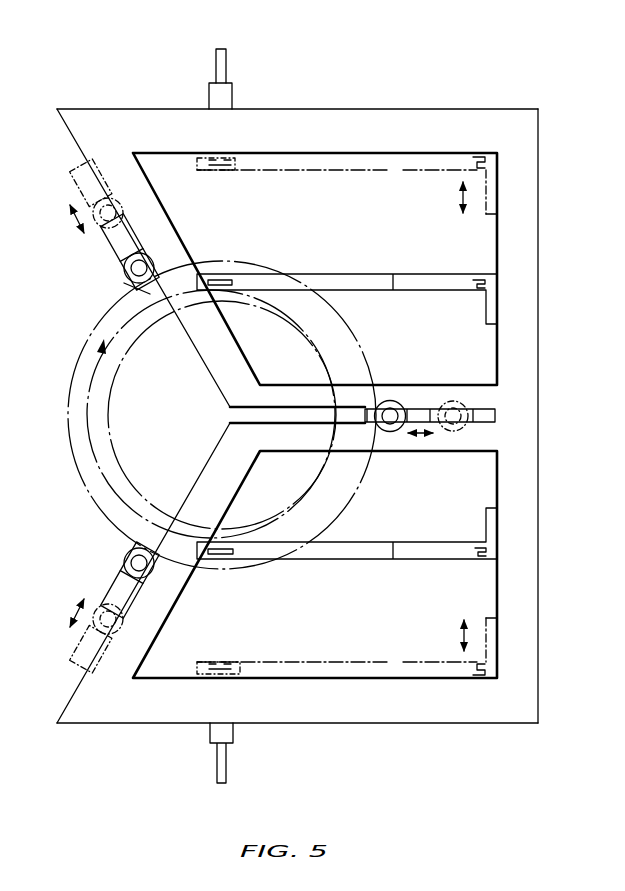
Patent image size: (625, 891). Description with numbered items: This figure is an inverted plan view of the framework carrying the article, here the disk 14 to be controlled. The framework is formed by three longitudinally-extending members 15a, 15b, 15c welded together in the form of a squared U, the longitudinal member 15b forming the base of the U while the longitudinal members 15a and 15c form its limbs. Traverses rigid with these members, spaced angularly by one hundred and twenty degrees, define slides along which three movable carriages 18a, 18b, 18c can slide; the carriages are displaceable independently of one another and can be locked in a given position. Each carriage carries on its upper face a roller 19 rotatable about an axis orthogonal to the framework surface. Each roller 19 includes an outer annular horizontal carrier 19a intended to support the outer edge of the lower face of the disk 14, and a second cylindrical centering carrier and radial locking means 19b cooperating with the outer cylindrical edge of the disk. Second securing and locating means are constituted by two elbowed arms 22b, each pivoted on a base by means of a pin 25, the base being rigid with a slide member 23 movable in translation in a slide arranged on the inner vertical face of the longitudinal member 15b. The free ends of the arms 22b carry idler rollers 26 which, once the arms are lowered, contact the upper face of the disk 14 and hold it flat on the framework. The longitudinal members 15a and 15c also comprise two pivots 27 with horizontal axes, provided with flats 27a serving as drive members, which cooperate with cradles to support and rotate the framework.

The disk 14 is at (68, 430).
The longitudinally-extending member 15a is at (338, 722).
The longitudinally-extending member 15b is at (528, 550).
The longitudinally-extending member 15c is at (377, 110).
The movable carriage 18a is at (112, 578).
The movable carriage 18b is at (112, 257).
The movable carriage 18c is at (425, 406).
The roller 19 is at (125, 556).
The outer annular horizontal carrier 19a is at (125, 273).
The cylindrical centering carrier and radial locking means 19b is at (125, 283).
The elbowed arm 22b is at (364, 163).
The slide member 23 is at (490, 183).
The pin 25 is at (487, 683).
The idler roller 26 is at (226, 172).
The pivot 27 is at (209, 100).
The flat 27a is at (216, 63).